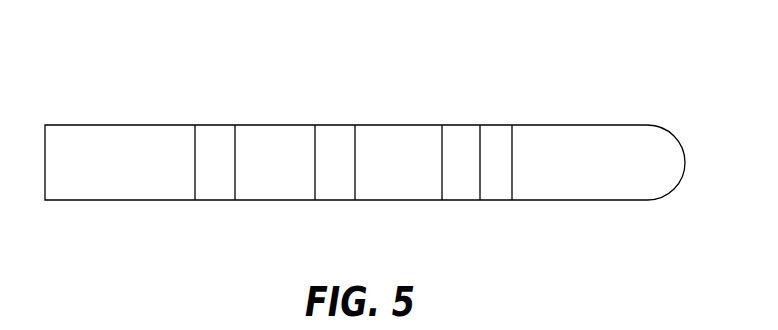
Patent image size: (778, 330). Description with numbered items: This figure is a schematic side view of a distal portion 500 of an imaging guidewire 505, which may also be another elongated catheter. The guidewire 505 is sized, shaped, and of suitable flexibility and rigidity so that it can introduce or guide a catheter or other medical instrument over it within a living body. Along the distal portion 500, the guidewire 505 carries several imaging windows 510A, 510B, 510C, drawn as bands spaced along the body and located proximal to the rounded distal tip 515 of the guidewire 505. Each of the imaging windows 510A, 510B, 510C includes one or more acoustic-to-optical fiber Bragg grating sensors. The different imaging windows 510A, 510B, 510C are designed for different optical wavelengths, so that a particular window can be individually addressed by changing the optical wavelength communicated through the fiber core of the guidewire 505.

The distal portion 500 is at (602, 41).
The imaging guidewire 505 is at (107, 125).
The imaging window 510A is at (214, 125).
The imaging window 510B is at (335, 125).
The imaging window 510C is at (462, 125).
The distal tip 515 is at (587, 125).